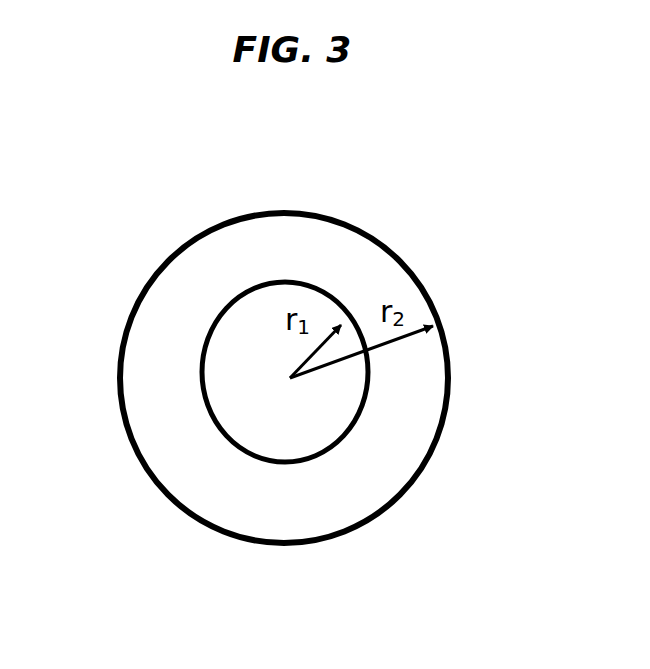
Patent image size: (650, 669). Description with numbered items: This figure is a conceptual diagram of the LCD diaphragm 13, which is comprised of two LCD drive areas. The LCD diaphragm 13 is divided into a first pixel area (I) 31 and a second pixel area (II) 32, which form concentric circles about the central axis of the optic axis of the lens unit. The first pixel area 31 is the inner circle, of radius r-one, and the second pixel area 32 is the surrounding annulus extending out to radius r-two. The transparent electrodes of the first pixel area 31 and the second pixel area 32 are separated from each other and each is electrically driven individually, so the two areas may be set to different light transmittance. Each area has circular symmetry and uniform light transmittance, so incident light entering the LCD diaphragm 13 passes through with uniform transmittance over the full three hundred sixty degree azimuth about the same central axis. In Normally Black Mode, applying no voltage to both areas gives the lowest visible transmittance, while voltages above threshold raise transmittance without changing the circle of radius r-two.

The LCD diaphragm 13 is at (277, 211).
The first pixel area (I) 31 is at (203, 375).
The second pixel area (II) 32 is at (368, 522).